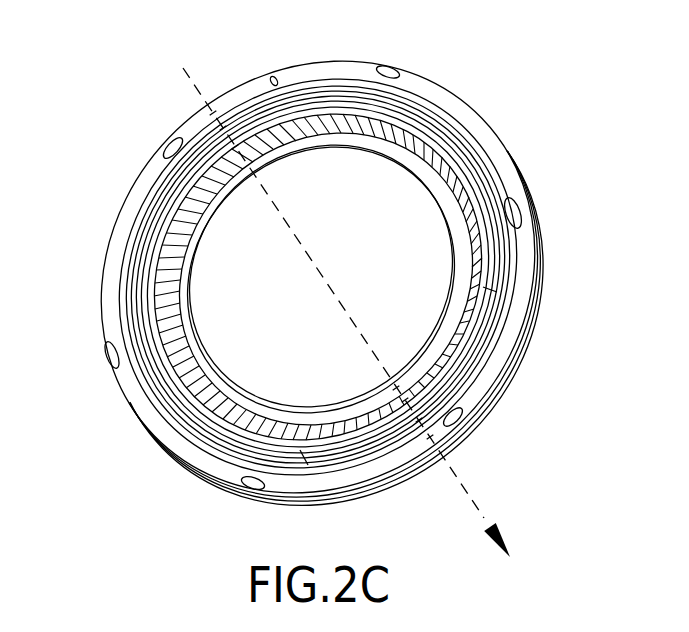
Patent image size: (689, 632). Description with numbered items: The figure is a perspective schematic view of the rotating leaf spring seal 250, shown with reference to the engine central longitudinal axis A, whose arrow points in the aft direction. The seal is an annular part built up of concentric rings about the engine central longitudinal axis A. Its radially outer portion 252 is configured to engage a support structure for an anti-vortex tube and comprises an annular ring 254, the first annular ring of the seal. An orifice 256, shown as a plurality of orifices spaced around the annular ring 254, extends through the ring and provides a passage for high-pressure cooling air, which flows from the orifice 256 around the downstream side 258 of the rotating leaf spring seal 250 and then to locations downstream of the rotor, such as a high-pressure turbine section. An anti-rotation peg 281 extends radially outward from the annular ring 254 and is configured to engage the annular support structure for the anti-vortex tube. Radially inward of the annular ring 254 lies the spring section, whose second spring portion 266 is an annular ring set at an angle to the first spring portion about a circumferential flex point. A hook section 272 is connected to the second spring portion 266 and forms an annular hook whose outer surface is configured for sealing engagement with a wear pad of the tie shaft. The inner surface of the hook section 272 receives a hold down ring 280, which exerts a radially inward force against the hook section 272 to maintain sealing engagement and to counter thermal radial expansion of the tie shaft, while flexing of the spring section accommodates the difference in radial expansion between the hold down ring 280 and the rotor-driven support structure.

The rotating leaf spring seal 250 is at (106, 126).
The radially outer portion 252 is at (478, 402).
The annular ring 254 is at (494, 366).
The orifice 256 is at (386, 66).
The downstream side 258 is at (486, 320).
The second spring portion 266 is at (478, 188).
The hook section 272 is at (384, 390).
The hold down ring 280 is at (478, 247).
The anti-rotation peg 281 is at (274, 79).
The engine central longitudinal axis A is at (183, 67).